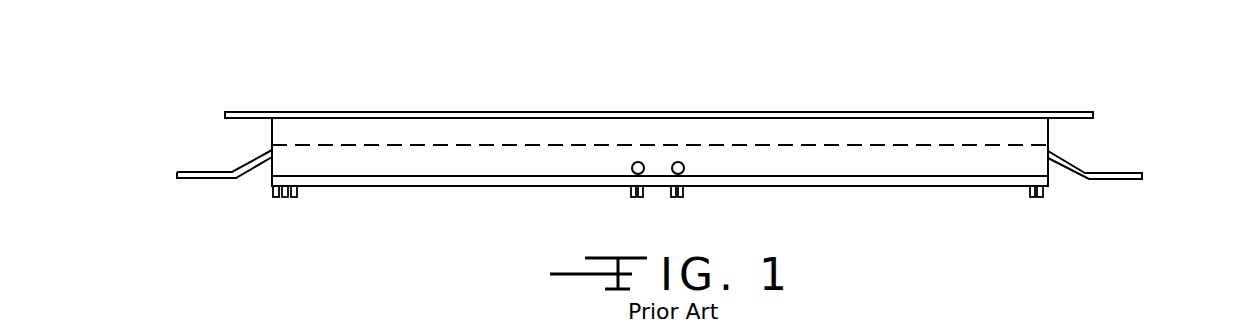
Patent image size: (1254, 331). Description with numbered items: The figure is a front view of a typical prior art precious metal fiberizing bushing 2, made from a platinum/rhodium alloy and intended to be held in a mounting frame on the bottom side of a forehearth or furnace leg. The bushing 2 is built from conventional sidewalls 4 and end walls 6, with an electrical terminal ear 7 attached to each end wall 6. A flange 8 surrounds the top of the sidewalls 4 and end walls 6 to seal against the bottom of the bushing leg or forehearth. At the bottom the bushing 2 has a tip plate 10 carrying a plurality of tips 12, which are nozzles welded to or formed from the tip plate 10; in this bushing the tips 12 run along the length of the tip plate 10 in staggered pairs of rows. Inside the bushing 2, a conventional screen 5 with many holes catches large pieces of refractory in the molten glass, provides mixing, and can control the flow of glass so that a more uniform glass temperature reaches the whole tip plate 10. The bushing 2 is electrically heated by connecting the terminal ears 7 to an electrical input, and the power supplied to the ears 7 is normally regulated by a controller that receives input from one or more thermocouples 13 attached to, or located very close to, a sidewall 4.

The precious metal fiberizing bushing 2 is at (1005, 100).
The sidewall 4 is at (920, 145).
The screen 5 is at (405, 145).
The end wall 6 is at (272, 136).
The electrical terminal ear 7 is at (207, 172).
The flange 8 is at (245, 112).
The tip plate 10 is at (343, 181).
The tips 12 is at (278, 198).
The thermocouple 13 is at (638, 162).